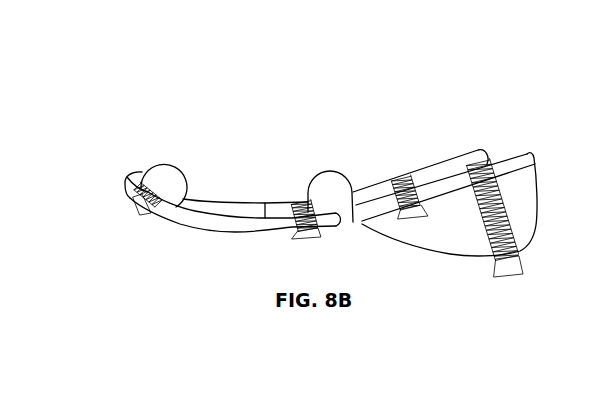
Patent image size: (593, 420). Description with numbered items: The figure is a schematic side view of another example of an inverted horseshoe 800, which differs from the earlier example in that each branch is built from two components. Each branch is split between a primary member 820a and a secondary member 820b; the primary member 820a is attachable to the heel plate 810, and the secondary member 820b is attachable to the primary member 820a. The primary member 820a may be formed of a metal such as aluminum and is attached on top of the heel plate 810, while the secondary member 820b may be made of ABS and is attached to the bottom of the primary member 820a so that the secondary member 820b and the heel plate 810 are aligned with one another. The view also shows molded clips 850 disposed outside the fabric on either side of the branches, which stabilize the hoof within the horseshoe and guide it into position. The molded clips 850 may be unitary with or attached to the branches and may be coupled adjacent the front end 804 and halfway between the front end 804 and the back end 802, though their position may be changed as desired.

The inverted horseshoe 800 is at (418, 113).
The back end 802 is at (495, 306).
The front end 804 is at (118, 240).
The heel plate 810 is at (527, 152).
The primary member 820a is at (294, 200).
The secondary member 820b is at (192, 230).
The molded clip 850 is at (168, 166).